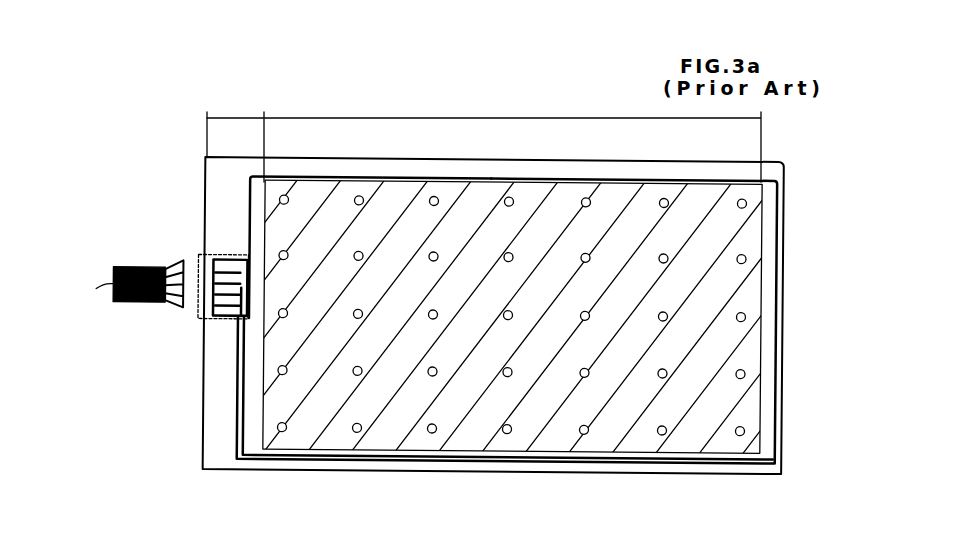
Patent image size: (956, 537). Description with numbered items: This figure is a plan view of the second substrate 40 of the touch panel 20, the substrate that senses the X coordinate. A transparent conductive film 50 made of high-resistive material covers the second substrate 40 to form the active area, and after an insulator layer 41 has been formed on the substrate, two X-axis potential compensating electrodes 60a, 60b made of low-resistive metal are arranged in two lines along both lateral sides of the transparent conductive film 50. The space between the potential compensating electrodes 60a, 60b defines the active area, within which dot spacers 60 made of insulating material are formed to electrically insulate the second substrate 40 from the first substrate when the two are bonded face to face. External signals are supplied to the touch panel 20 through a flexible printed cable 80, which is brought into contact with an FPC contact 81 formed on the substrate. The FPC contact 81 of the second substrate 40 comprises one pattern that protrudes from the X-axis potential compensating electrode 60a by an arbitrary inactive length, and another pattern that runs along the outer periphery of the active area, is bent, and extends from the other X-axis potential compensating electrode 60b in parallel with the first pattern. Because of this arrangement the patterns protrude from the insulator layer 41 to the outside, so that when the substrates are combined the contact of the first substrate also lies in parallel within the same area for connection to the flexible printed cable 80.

The touch panel 20 is at (295, 51).
The second substrate 40 is at (794, 201).
The insulator layer 41 is at (226, 220).
The transparent conductive film 50 is at (746, 298).
The dot spacers 60 is at (743, 375).
The X-axis potential compensating electrode 60a is at (250, 191).
The X-axis potential compensating electrode 60b is at (770, 253).
The flexible printed cable 80 is at (112, 291).
The FPC contact 81 is at (226, 322).